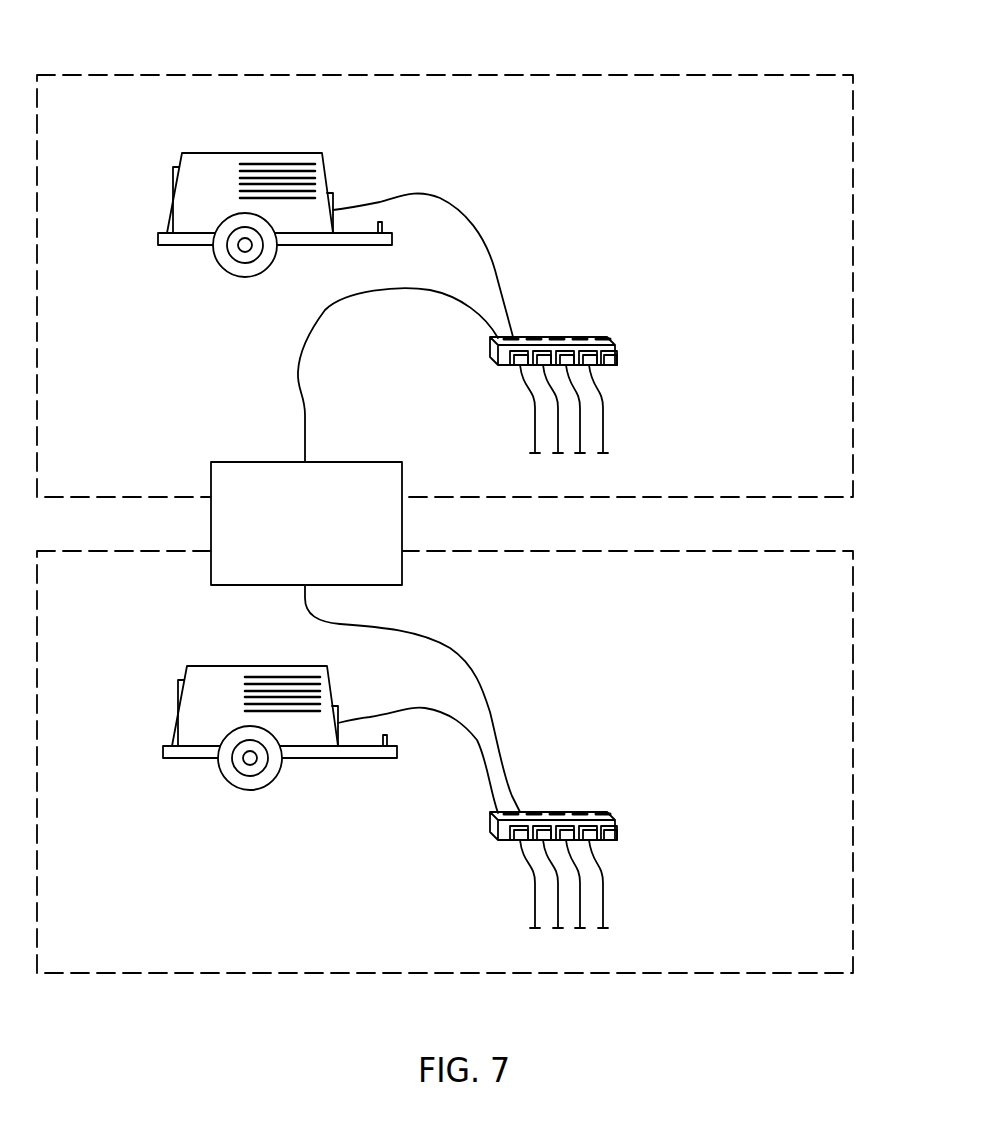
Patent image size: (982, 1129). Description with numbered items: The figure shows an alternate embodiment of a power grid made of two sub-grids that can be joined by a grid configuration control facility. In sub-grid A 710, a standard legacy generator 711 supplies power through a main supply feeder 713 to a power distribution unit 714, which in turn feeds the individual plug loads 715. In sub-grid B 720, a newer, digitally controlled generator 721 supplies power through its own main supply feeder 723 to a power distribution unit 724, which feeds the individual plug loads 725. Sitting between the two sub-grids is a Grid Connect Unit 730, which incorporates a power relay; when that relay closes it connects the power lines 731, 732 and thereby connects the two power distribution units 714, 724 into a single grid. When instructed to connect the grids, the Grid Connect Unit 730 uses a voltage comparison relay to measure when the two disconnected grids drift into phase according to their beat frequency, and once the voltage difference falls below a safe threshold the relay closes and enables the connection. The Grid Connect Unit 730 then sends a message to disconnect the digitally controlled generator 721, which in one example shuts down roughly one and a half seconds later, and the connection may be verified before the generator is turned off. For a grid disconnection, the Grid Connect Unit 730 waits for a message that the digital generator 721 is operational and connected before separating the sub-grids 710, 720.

The sub-grid A 710 is at (720, 75).
The standard legacy generator 711 is at (287, 153).
The main supply feeder 713 is at (460, 212).
The power distribution unit 714 is at (602, 347).
The plug loads 715 is at (535, 405).
The sub-grid B 720 is at (718, 551).
The digitally controlled generator 721 is at (211, 666).
The main supply feeder 723 is at (475, 738).
The power distribution unit 724 is at (602, 822).
The plug loads 725 is at (616, 884).
The Grid Connect Unit 730 is at (240, 462).
The power line 731 is at (305, 348).
The power line 732 is at (472, 663).